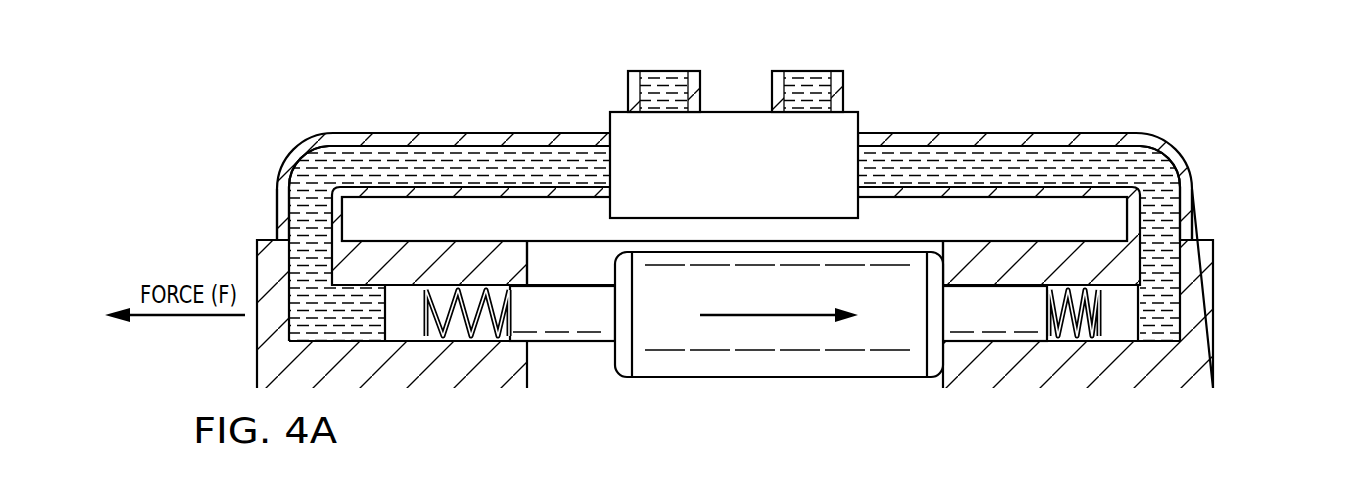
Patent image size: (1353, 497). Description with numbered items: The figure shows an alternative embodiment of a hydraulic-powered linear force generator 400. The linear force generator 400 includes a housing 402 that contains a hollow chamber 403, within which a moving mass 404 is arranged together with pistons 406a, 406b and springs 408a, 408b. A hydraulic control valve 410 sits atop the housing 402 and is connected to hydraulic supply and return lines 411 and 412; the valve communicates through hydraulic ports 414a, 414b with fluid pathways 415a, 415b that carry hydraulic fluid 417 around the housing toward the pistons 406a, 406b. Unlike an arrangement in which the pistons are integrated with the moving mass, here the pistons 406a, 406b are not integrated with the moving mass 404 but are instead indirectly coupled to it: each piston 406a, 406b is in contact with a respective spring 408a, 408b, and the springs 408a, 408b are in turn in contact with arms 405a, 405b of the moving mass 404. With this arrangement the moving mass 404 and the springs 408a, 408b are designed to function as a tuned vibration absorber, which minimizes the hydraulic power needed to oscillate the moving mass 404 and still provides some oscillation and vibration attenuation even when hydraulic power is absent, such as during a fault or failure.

The linear force generator 400 is at (324, 80).
The housing 402 is at (1205, 278).
The hollow chamber 403 is at (592, 375).
The moving mass 404 is at (768, 378).
The arm of moving mass 405a is at (550, 320).
The arm of moving mass 405b is at (1003, 335).
The piston 406a is at (392, 318).
The piston 406b is at (1127, 312).
The spring 408a is at (437, 330).
The spring 408b is at (1048, 298).
The hydraulic control valve 410 is at (740, 112).
The hydraulic supply line 411 is at (663, 70).
The hydraulic return line 412 is at (810, 70).
The hydraulic port 414a is at (610, 163).
The hydraulic port 414b is at (860, 163).
The fluid pathway 415a is at (485, 137).
The fluid pathway 415b is at (1012, 137).
The hydraulic fluid 417 is at (390, 160).